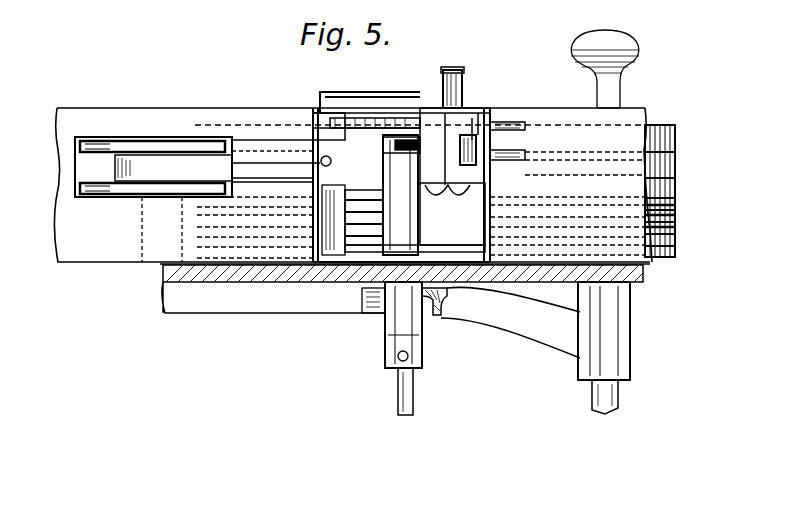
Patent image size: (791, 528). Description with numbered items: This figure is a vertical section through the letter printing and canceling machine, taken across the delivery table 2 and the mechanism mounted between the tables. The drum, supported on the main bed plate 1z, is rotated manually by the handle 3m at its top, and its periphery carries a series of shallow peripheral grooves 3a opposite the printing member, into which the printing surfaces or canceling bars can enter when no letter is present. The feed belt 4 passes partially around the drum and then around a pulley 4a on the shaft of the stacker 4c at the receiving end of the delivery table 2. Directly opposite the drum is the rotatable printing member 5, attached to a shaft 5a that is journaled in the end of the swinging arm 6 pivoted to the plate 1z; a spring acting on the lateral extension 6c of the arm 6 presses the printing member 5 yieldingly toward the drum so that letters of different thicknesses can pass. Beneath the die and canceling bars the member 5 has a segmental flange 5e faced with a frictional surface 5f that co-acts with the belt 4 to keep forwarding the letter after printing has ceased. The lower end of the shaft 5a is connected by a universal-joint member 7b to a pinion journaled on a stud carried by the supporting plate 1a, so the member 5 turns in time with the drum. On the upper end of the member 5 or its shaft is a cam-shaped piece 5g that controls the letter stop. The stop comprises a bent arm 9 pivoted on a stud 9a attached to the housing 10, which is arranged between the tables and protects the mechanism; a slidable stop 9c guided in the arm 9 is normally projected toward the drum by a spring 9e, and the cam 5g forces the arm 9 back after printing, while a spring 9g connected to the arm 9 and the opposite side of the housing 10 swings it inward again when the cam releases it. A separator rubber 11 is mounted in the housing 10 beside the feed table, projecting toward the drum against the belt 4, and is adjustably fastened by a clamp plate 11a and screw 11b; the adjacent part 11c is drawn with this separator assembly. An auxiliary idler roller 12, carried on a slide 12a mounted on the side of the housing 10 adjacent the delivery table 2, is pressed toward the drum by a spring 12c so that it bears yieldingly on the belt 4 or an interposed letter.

The supporting plate 1a is at (632, 112).
The main bed plate 1z is at (183, 283).
The delivery table 2 is at (230, 108).
The shallow peripheral grooves 3a is at (676, 227).
The handle 3m is at (613, 41).
The feed belt 4 is at (166, 168).
The pulley 4a is at (130, 181).
The stacker 4c is at (110, 146).
The printing member 5 is at (442, 193).
The shaft 5a is at (385, 321).
The segmental flange 5e is at (432, 247).
The frictional surface 5f is at (335, 283).
The cam-shaped piece 5g is at (464, 135).
The swinging arm 6 is at (535, 330).
The lateral extension 6c is at (448, 308).
The universal-joint member 7b is at (412, 392).
The bent arm 9 is at (443, 88).
The stud 9a is at (461, 70).
The slidable stop 9c is at (392, 143).
The spring 9e is at (400, 118).
The spring 9g is at (362, 92).
The housing 10 is at (313, 118).
The separator rubber 11 is at (525, 116).
The clamp plate 11a is at (490, 120).
The screw 11b is at (473, 135).
The lower arm 11c is at (520, 158).
The auxiliary idler roller 12 is at (312, 187).
The slide 12a is at (318, 166).
The spring 12c is at (313, 141).